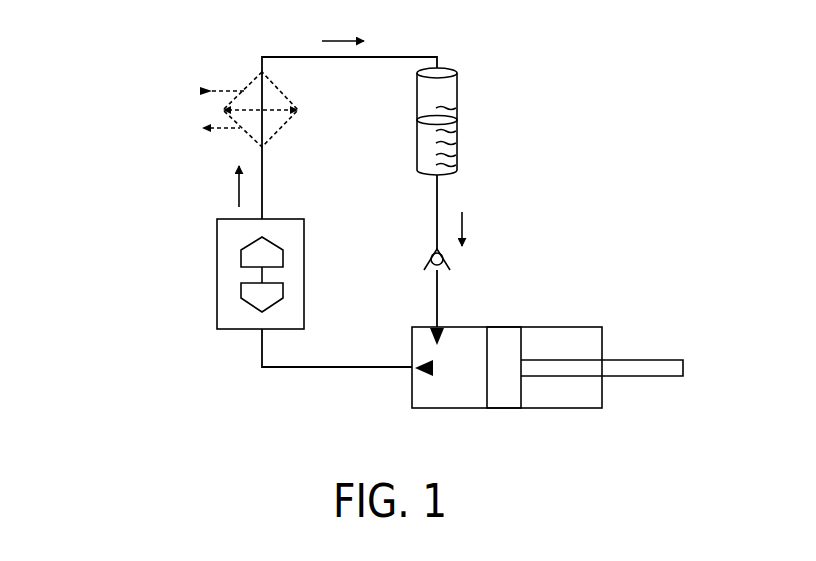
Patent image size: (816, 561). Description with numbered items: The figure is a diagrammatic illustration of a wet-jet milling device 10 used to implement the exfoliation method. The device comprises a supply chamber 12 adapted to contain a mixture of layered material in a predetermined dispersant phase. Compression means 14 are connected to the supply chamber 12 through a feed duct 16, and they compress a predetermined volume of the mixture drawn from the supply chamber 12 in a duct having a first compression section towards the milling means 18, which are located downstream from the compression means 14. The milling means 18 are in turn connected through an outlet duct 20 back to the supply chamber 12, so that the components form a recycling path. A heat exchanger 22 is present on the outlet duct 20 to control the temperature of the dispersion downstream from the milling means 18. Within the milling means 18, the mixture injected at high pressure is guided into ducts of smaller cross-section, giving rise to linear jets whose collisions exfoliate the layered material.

The wet-jet milling device 10 is at (540, 145).
The supply chamber 12 is at (476, 124).
The compression means 14 is at (617, 341).
The feed duct 16 is at (448, 207).
The milling means 18 is at (204, 229).
The outlet duct 20 is at (250, 54).
The heat exchanger 22 is at (190, 107).